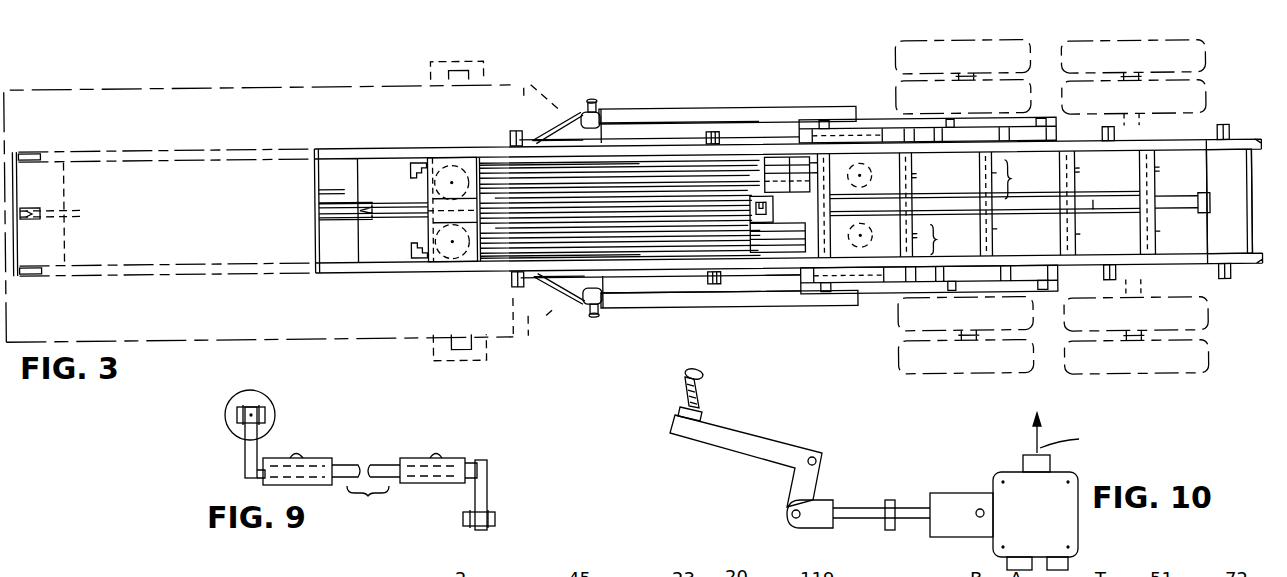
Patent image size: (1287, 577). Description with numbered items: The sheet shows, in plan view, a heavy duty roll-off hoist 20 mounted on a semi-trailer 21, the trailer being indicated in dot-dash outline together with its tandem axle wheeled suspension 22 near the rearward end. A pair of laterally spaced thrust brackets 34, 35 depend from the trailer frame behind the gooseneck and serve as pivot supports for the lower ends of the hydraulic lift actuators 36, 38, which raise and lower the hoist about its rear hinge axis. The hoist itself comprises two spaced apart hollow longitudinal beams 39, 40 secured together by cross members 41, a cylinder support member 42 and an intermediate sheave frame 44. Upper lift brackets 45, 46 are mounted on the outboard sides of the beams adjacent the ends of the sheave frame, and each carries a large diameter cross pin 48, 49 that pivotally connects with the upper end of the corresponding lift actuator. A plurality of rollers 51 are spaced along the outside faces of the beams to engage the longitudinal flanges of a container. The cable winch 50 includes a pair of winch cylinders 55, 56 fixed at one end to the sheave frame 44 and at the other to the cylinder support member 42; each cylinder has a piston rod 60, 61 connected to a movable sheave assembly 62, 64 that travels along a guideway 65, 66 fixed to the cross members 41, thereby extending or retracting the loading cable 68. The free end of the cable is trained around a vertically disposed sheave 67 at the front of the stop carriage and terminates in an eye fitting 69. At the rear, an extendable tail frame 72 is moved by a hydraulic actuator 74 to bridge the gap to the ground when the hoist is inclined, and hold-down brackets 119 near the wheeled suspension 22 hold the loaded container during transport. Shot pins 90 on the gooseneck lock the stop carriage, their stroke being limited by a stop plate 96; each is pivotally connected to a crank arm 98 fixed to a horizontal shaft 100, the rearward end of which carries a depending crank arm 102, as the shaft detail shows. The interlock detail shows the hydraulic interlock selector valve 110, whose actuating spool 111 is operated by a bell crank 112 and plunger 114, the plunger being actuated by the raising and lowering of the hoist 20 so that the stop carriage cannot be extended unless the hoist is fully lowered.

In FIG. 3, the roll-off hoist 20 is at (1178, 272).
In FIG. 3, the semi-trailer 21 is at (305, 344).
In FIG. 3, the tandem axle wheeled suspension 22 is at (898, 99).
In FIG. 3, the thrust bracket 34 is at (858, 300).
In FIG. 3, the thrust bracket 35 is at (860, 126).
In FIG. 3, the hydraulic lift actuator 36 is at (765, 298).
In FIG. 3, the hydraulic lift actuator 38 is at (680, 114).
In FIG. 3, the longitudinal beam 39 is at (688, 267).
In FIG. 3, the longitudinal beam 40 is at (615, 152).
In FIG. 3, the cross members 41 is at (985, 176).
In FIG. 3, the cylinder support member 42 is at (762, 197).
In FIG. 3, the intermediate sheave frame 44 is at (436, 166).
In FIG. 3, the upper lift bracket 45 is at (573, 290).
In FIG. 3, the upper lift bracket 46 is at (567, 131).
In FIG. 3, the cross pin 48 is at (592, 321).
In FIG. 3, the cross pin 49 is at (594, 103).
In FIG. 3, the cable winch 50 is at (425, 228).
In FIG. 3, the rollers 51 is at (519, 132).
In FIG. 3, the winch cylinder 55 is at (500, 247).
In FIG. 3, the winch cylinder 56 is at (489, 172).
In FIG. 3, the piston rod 60 is at (812, 238).
In FIG. 3, the piston rod 61 is at (813, 176).
In FIG. 3, the movable sheave assembly 62 is at (871, 235).
In FIG. 3, the movable sheave assembly 64 is at (871, 175).
In FIG. 3, the guideway 65 is at (946, 239).
In FIG. 3, the guideway 66 is at (1021, 178).
In FIG. 3, the sheave 67 is at (27, 212).
In FIG. 3, the loading cable 68 is at (322, 197).
In FIG. 3, the eye fitting 69 is at (340, 213).
In FIG. 3, the extendable tail frame 72 is at (1250, 278).
In FIG. 3, the hydraulic actuator 74 is at (1172, 210).
In FIG. 3, the shot pins 90 is at (416, 163).
In FIG. 9, the stop plate 96 is at (236, 415).
In FIG. 9, the crank arm 98 is at (245, 452).
In FIG. 9, the horizontal shaft 100 is at (340, 470).
In FIG. 9, the depending crank arm 102 is at (488, 487).
In FIG. 10, the hydraulic interlock selector valve 110 is at (1080, 533).
In FIG. 10, the actuating spool 111 is at (912, 505).
In FIG. 10, the bell crank 112 is at (728, 440).
In FIG. 10, the plunger 114 is at (686, 389).
In FIG. 3, the hold-down brackets 119 is at (873, 126).